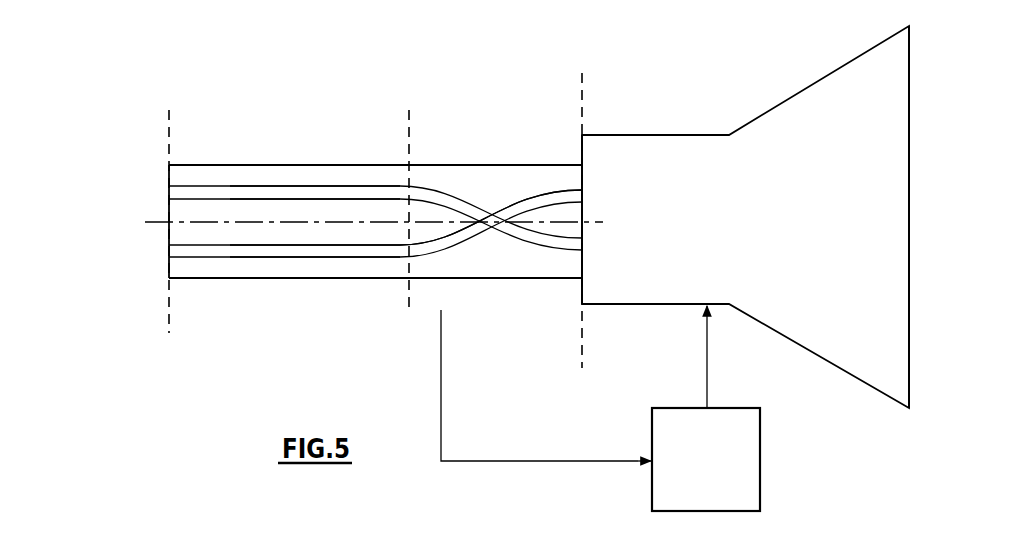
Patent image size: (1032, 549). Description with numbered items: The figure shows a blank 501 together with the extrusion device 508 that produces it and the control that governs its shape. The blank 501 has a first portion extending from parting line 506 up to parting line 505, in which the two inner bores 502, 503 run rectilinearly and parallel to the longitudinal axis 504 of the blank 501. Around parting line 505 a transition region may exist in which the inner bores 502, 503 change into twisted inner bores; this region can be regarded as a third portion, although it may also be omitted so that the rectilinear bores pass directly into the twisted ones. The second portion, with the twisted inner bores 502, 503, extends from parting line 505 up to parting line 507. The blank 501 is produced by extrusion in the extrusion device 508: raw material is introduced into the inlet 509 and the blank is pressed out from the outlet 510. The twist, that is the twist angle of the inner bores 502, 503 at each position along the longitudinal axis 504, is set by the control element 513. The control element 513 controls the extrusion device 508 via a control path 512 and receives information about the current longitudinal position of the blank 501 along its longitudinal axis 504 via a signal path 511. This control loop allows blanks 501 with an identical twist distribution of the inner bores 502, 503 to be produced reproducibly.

The blank 501 is at (536, 192).
The inner bore 502 is at (318, 190).
The inner bore 503 is at (296, 251).
The longitudinal axis 504 is at (398, 223).
The parting line 505 is at (410, 193).
The parting line 506 is at (170, 206).
The parting line 507 is at (581, 205).
The extrusion device 508 is at (766, 221).
The inlet 509 is at (929, 202).
The outlet 510 is at (608, 220).
The signal path 511 is at (521, 462).
The control path 512 is at (708, 380).
The control element 513 is at (726, 474).